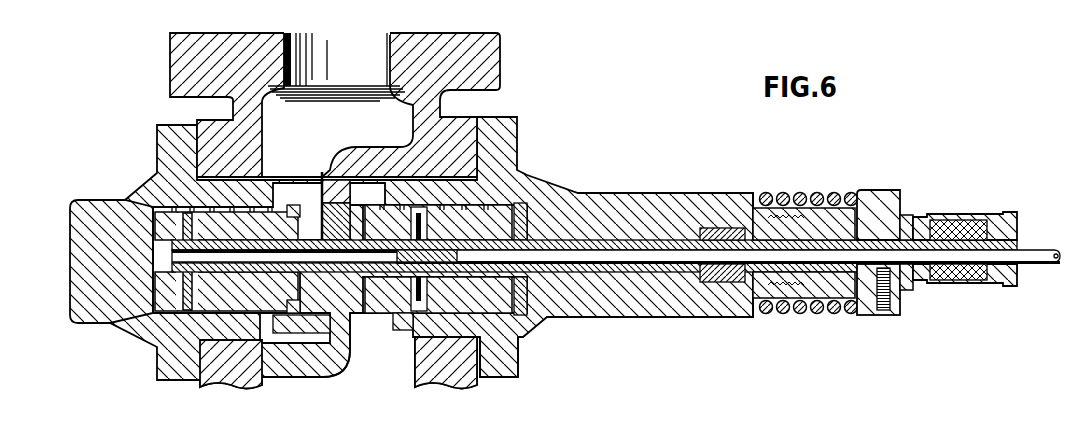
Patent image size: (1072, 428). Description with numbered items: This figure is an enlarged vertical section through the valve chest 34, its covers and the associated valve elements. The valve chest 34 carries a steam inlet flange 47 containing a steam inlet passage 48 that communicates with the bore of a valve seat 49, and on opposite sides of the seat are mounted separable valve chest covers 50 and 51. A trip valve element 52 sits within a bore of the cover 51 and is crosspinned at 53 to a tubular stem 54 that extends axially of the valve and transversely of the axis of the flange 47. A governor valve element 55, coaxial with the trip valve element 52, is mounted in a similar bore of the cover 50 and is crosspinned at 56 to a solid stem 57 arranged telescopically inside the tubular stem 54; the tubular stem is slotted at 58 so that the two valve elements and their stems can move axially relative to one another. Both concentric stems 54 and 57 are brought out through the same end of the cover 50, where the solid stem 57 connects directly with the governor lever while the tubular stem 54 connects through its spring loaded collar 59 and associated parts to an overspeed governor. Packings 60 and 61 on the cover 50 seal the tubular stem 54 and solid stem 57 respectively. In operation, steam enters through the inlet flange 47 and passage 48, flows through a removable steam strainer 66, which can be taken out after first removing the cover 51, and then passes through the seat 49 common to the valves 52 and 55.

The valve chest 34 is at (529, 170).
The steam inlet flange 47 is at (493, 63).
The steam inlet passage 48 is at (308, 134).
The valve seat 49 is at (343, 345).
The valve chest cover 50 is at (648, 205).
The valve chest cover 51 is at (107, 310).
The trip valve element 52 is at (227, 297).
The crosspin 53 is at (185, 290).
The tubular stem 54 is at (313, 273).
The governor valve element 55 is at (483, 293).
The crosspin 56 is at (413, 287).
The solid stem 57 is at (657, 254).
The slot 58 is at (388, 245).
The spring loaded collar 59 is at (880, 203).
The packing 60 is at (717, 282).
The packing 61 is at (977, 268).
The steam strainer 66 is at (290, 183).